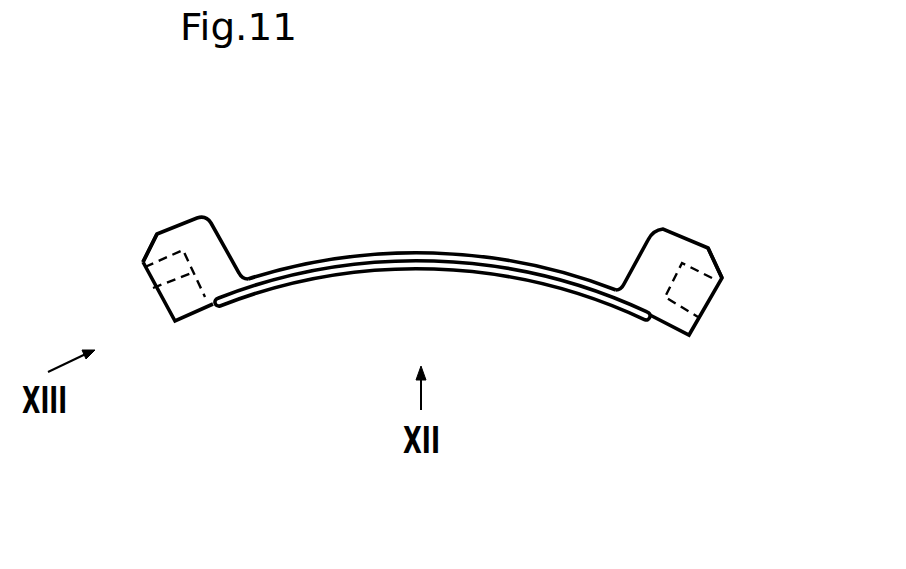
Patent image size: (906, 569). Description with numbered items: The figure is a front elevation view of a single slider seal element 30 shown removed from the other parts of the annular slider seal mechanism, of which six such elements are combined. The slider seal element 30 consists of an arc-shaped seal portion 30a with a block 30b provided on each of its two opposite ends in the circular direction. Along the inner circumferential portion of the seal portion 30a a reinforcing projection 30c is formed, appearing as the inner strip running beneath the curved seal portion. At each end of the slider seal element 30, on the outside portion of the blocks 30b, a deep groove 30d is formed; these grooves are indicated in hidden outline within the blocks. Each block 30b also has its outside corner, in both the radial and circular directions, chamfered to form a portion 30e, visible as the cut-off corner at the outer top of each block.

The slider seal element 30 is at (492, 188).
The arc-shaped seal portion 30a is at (397, 255).
The block 30b is at (192, 243).
The reinforcing projection 30c is at (435, 263).
The deep groove 30d is at (153, 288).
The chamfered portion 30e is at (148, 241).